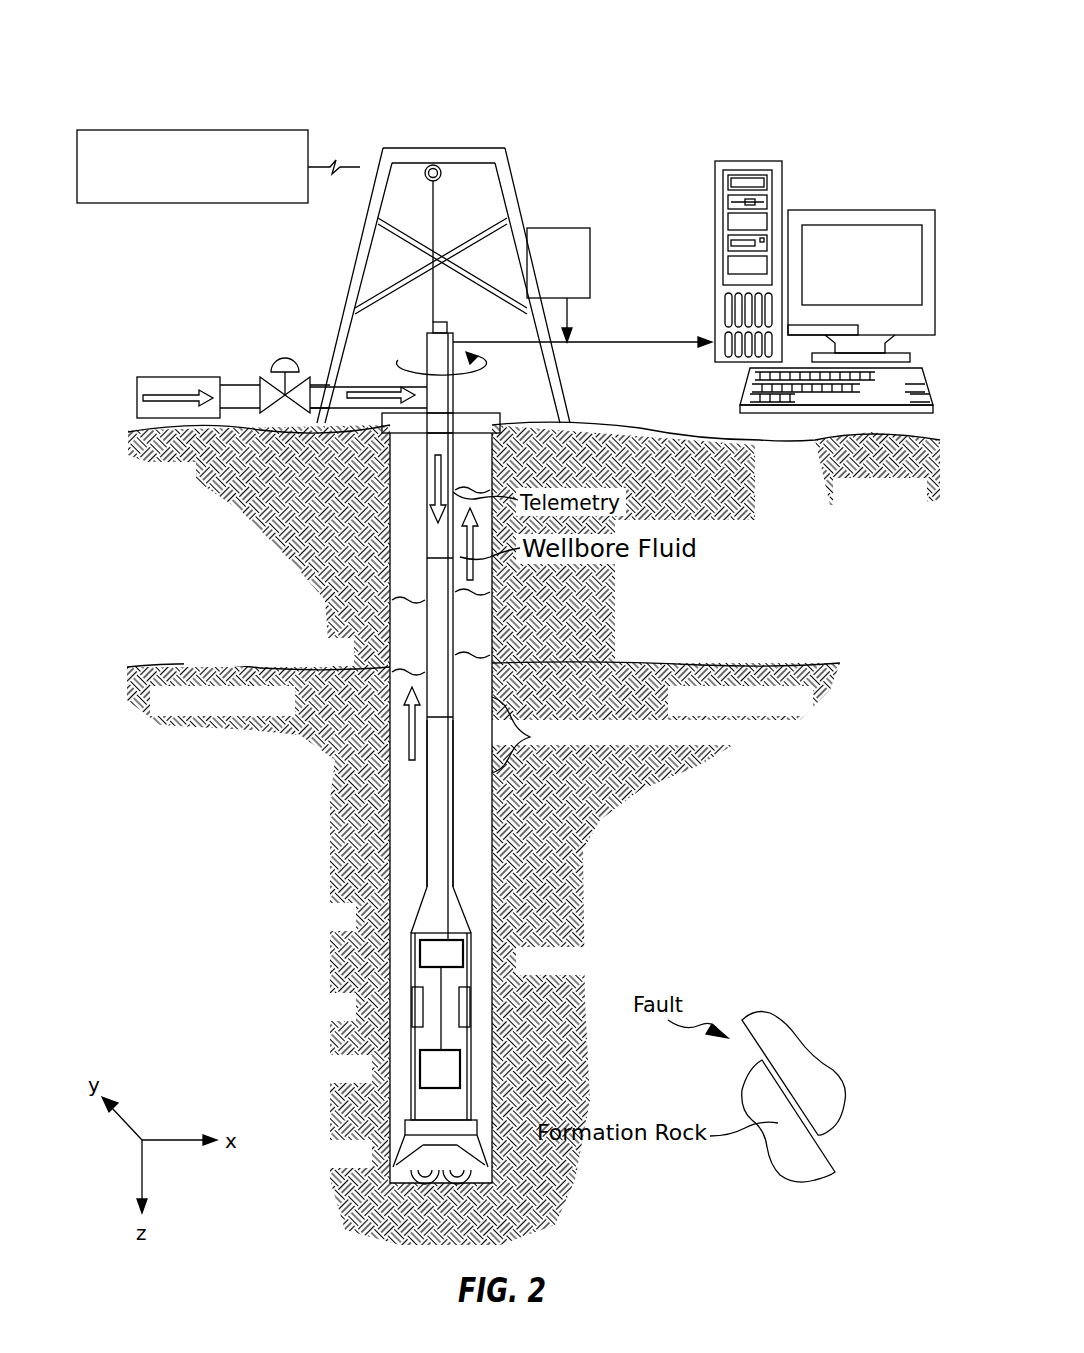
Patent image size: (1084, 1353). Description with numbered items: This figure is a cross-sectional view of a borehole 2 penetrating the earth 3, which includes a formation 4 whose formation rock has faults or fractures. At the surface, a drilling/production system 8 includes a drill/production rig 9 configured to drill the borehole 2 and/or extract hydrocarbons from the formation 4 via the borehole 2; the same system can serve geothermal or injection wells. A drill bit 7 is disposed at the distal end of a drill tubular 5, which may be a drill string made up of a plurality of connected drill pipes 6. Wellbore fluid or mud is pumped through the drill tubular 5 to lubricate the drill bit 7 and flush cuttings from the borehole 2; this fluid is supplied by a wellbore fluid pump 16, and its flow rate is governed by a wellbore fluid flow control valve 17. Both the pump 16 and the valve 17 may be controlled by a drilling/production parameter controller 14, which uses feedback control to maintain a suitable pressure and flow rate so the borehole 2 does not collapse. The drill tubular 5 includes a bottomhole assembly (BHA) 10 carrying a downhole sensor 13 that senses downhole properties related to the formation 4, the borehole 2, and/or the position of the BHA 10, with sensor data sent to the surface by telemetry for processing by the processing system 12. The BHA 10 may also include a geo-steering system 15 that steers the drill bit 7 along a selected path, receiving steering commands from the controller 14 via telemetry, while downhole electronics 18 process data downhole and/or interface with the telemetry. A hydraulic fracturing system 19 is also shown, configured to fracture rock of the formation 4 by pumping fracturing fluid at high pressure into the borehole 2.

The borehole 2 is at (412, 578).
The earth 3 is at (192, 490).
The formation 4 is at (290, 712).
The drill tubular 5 is at (426, 672).
The drill pipes 6 is at (427, 530).
The drill bit 7 is at (407, 1137).
The drilling/production system 8 is at (823, 206).
The drill/production rig 9 is at (383, 150).
The bottomhole assembly (BHA) 10 is at (420, 907).
The processing system 12 is at (748, 161).
The downhole sensor 13 is at (433, 1062).
The drilling/production parameter controller 14 is at (557, 228).
The geo-steering system 15 is at (417, 998).
The wellbore fluid pump 16 is at (177, 377).
The wellbore fluid flow control valve 17 is at (290, 353).
The downhole electronics 18 is at (443, 952).
The hydraulic fracturing system 19 is at (250, 196).